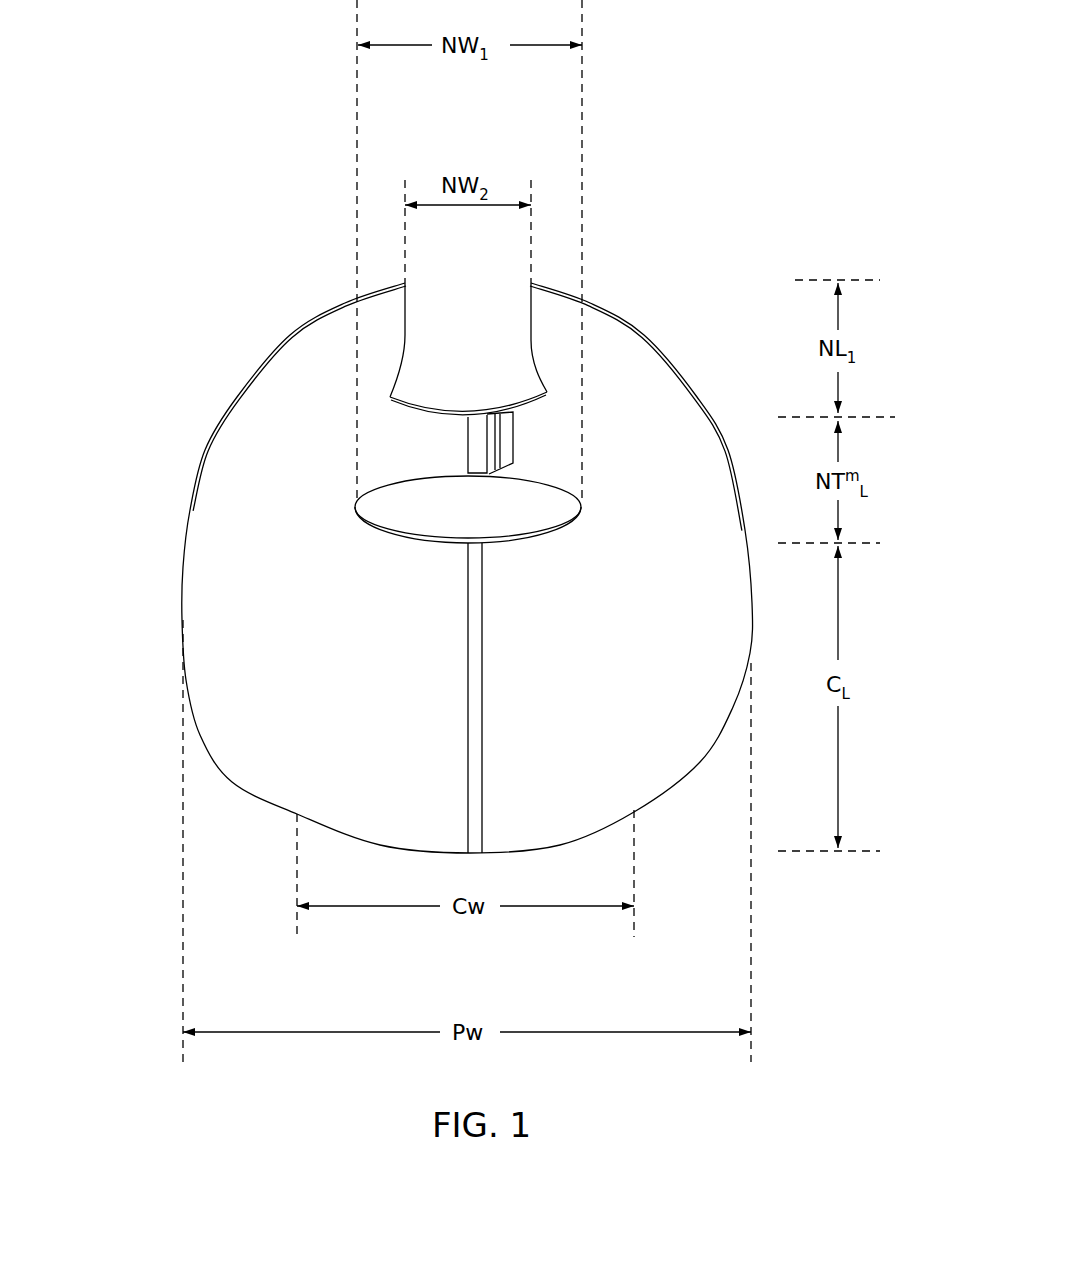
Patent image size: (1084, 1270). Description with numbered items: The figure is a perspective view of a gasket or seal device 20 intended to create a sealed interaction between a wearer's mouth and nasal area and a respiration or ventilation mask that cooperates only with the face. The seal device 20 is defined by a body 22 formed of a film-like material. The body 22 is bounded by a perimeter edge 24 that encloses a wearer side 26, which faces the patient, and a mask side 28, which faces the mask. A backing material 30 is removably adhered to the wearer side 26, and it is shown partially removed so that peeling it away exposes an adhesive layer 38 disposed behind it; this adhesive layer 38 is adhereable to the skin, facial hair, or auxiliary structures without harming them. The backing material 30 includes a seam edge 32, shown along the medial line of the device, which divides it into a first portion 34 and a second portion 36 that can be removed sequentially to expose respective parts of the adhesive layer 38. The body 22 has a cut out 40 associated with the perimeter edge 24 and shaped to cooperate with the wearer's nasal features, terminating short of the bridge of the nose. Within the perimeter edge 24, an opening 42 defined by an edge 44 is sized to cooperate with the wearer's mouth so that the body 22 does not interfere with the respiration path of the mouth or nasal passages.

The seal device 20 is at (645, 205).
The body 22 is at (471, 425).
The perimeter edge 24 is at (183, 568).
The wearer side 26 is at (225, 642).
The mask side 28 is at (222, 393).
The backing material 30 is at (353, 666).
The seam edge 32 is at (466, 800).
The first portion 34 is at (298, 723).
The second portion 36 is at (576, 703).
The adhesive layer 38 is at (469, 454).
The cut out 40 is at (437, 385).
The opening 42 is at (400, 517).
The edge 44 is at (412, 540).